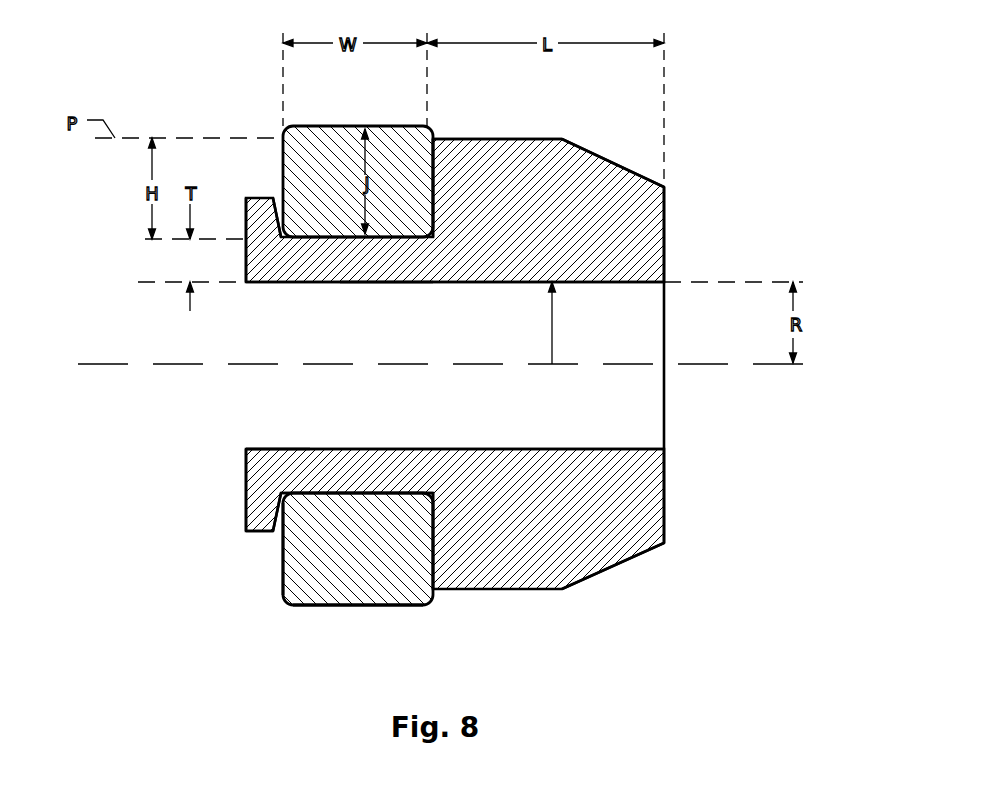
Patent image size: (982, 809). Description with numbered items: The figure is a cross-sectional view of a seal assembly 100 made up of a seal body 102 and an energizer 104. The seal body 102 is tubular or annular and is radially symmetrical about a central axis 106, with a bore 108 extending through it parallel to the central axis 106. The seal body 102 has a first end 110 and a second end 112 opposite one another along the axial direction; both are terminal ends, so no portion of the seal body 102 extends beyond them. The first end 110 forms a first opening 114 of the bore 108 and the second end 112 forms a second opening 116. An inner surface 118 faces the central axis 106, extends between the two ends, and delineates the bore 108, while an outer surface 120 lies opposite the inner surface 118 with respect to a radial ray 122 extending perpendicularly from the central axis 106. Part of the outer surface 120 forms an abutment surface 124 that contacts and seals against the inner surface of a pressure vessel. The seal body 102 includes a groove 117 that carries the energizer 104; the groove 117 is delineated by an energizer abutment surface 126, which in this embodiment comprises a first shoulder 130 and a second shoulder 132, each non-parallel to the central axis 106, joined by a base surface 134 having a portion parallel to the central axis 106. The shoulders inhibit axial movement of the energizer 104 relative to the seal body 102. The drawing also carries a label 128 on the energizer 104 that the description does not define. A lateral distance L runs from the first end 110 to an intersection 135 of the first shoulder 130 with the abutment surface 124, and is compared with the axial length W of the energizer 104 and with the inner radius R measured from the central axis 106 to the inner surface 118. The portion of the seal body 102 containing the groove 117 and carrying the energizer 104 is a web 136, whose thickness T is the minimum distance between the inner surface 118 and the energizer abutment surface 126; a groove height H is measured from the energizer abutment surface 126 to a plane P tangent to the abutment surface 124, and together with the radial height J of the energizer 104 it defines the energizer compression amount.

The seal assembly 100 is at (440, 352).
The seal body 102 is at (443, 347).
The energizer 104 is at (328, 565).
The central axis 106 is at (440, 346).
The bore 108 is at (506, 371).
The first end 110 is at (664, 562).
The second end 112 is at (218, 532).
The first opening 114 is at (715, 365).
The second opening 116 is at (195, 364).
The inner surface 118 is at (242, 436).
The outer surface 120 is at (613, 153).
The radial ray 122 is at (639, 323).
The abutment surface 124 is at (497, 123).
The energizer abutment surface 126 is at (226, 510).
The ring outer surface 128 is at (380, 621).
The first shoulder 130 is at (493, 559).
The second shoulder 132 is at (251, 549).
The base surface 134 is at (276, 481).
The intersection 135 is at (474, 152).
The web 136 is at (355, 302).
The groove 117 is at (240, 196).